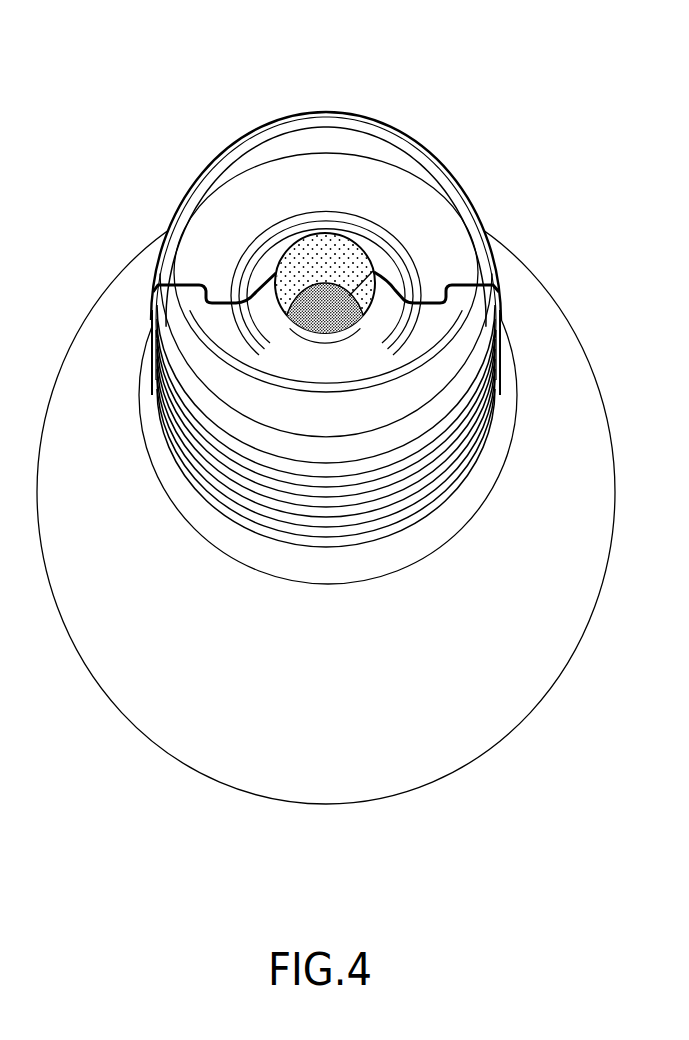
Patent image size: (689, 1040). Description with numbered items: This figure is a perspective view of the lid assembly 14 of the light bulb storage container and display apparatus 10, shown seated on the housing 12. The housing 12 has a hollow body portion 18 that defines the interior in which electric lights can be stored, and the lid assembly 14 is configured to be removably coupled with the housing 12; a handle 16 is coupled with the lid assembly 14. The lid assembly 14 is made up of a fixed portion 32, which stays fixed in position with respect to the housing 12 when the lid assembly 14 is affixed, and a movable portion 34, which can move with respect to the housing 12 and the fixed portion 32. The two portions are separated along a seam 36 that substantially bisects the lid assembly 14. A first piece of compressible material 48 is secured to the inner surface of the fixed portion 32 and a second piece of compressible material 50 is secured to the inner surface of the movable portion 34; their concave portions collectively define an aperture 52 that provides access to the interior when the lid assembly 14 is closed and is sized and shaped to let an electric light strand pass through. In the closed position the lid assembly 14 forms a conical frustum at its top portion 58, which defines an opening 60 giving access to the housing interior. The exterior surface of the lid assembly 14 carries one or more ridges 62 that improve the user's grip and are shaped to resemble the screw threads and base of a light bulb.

The apparatus 10 is at (176, 86).
The housing 12 is at (326, 709).
The lid assembly 14 is at (477, 342).
The handle 16 is at (358, 112).
The hollow body portion 18 is at (471, 661).
The fixed portion 32 is at (334, 421).
The movable portion 34 is at (336, 206).
The seam 36 is at (243, 306).
The first piece of compressible material 48 is at (370, 291).
The second piece of compressible material 50 is at (347, 250).
The aperture 52 is at (305, 260).
The top portion 58 is at (276, 344).
The opening 60 is at (325, 283).
The ridges 62 is at (433, 500).